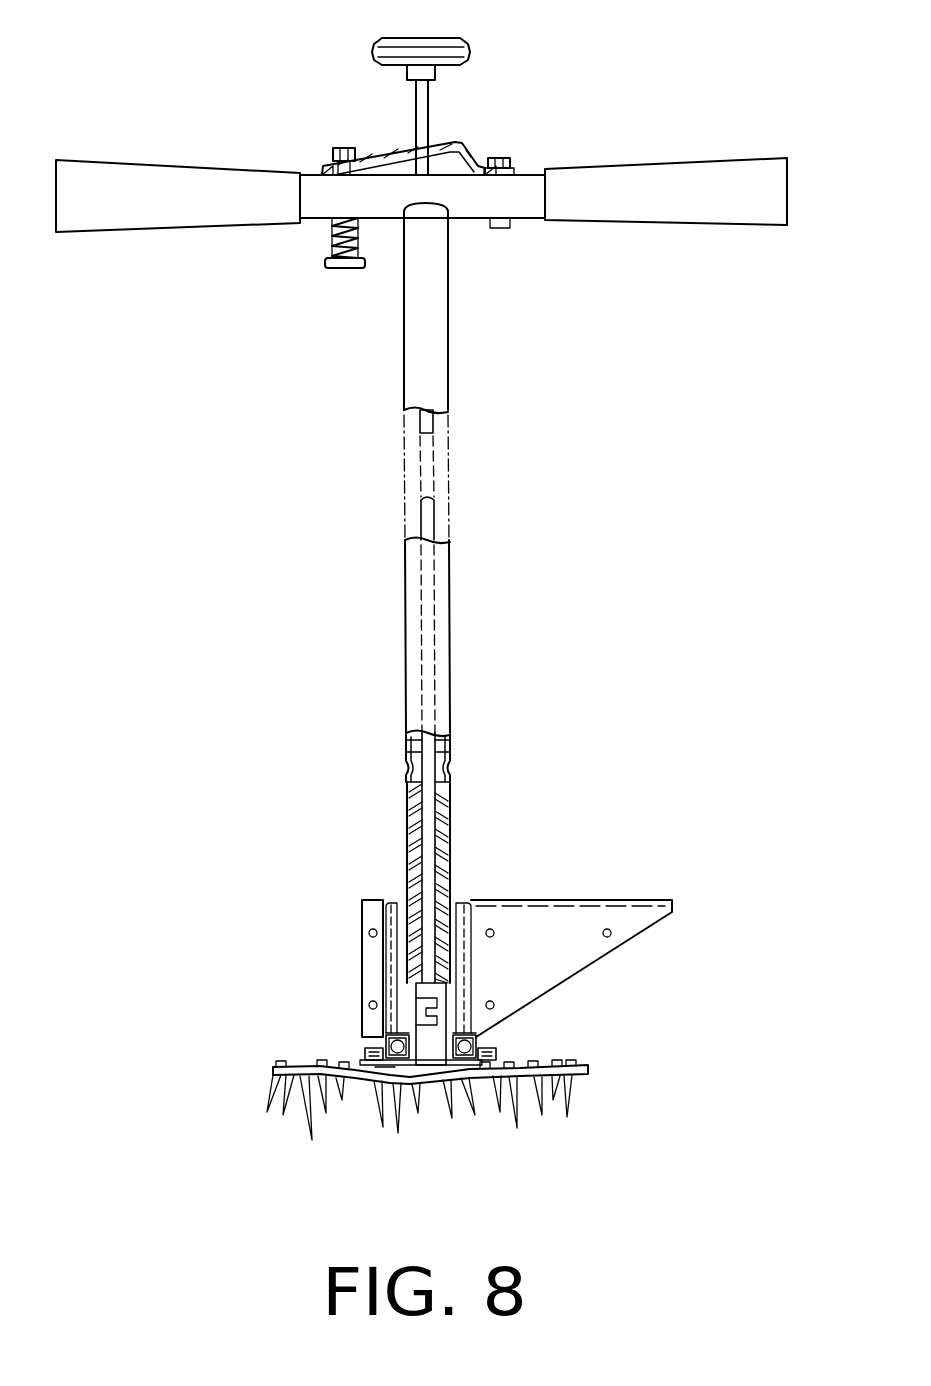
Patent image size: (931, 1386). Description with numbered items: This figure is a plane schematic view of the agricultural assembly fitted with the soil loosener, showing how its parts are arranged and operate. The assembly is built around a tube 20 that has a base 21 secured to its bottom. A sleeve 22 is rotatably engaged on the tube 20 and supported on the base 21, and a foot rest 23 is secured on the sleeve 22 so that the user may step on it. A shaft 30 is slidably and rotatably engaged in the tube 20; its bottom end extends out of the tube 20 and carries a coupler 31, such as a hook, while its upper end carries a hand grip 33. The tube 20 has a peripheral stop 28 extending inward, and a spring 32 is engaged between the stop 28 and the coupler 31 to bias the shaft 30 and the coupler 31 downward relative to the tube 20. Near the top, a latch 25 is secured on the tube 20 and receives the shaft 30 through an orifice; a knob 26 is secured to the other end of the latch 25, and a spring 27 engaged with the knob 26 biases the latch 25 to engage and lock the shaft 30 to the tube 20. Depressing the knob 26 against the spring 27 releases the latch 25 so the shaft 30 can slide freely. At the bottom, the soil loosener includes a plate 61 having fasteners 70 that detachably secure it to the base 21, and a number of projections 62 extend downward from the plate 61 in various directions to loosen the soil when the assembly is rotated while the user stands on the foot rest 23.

The tube 20 is at (404, 403).
The base 21 is at (392, 1068).
The sleeve 22 is at (371, 1048).
The foot rest 23 is at (560, 900).
The latch 25 is at (392, 152).
The knob 26 is at (340, 270).
The spring 27 is at (330, 240).
The peripheral stop 28 is at (455, 770).
The shaft 30 is at (435, 520).
The coupler 31 is at (421, 997).
The spring 32 is at (412, 820).
The hand grip 33 is at (437, 38).
The plate 61 is at (590, 1070).
The projections 62 is at (543, 1103).
The fasteners 70 is at (498, 1048).